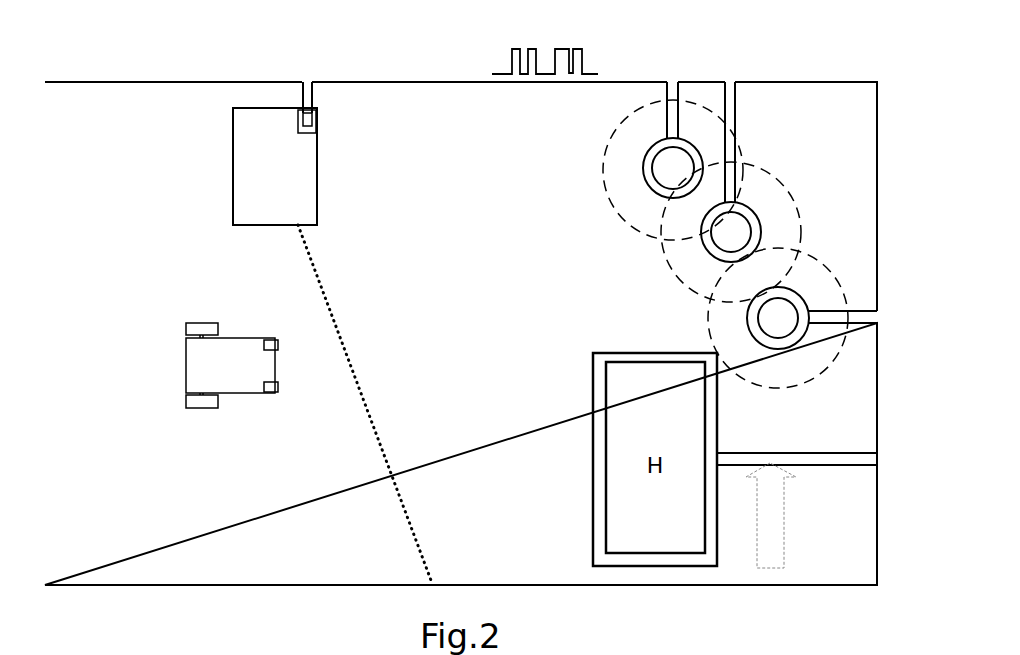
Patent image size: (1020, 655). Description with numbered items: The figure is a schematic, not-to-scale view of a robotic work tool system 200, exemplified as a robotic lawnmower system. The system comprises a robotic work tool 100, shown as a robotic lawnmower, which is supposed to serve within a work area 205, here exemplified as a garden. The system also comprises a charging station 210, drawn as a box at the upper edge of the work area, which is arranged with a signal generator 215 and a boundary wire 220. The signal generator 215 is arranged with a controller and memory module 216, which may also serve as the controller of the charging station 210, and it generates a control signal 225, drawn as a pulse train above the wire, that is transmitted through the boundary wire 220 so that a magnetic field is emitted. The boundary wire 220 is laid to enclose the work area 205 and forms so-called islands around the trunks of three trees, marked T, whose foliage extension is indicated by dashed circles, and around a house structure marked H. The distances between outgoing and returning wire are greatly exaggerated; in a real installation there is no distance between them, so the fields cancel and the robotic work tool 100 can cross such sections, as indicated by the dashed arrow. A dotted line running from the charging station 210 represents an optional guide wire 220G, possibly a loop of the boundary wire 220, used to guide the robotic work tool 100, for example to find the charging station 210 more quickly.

The robotic work tool 100 is at (222, 394).
The robotic work tool system 200 is at (205, 72).
The work area 205 is at (143, 110).
The charging station 210 is at (233, 145).
The signal generator 215 is at (315, 127).
The controller and memory module 216 is at (315, 121).
The boundary wire 220 is at (527, 82).
The guide wire 220G is at (325, 290).
The control signal 225 is at (560, 49).